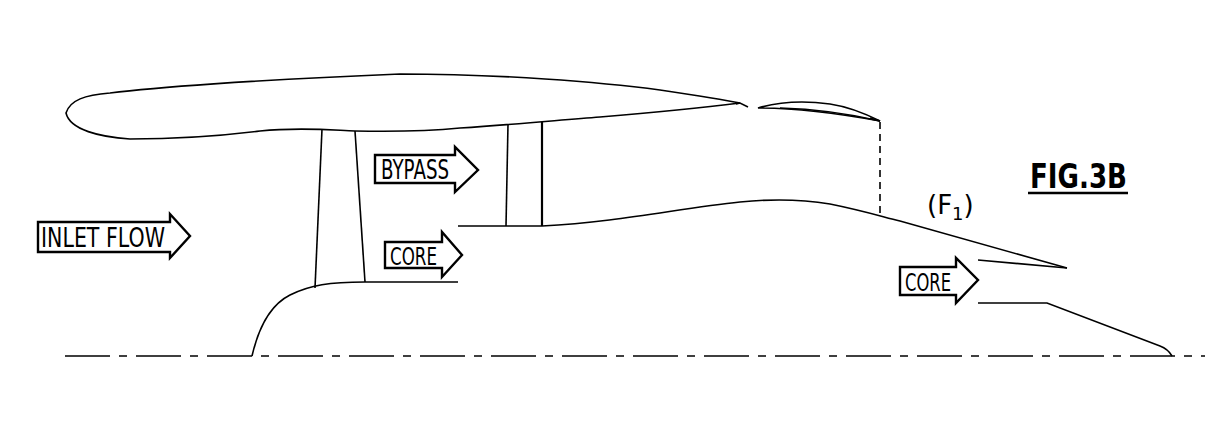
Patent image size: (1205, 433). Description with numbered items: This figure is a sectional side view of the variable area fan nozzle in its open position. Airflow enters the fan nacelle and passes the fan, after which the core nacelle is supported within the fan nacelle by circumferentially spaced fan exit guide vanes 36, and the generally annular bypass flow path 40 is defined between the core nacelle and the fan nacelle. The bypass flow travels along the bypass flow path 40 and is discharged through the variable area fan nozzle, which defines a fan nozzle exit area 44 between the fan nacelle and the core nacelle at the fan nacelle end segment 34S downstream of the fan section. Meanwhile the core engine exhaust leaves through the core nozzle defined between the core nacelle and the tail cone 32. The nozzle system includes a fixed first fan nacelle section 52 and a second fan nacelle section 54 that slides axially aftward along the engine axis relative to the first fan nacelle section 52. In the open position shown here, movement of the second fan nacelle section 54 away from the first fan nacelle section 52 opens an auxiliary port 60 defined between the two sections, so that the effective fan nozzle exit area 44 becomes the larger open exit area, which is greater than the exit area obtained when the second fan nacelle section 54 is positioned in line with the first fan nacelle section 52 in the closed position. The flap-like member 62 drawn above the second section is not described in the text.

The tail cone 32 is at (1115, 327).
The fan nacelle end segment 34S is at (882, 120).
The fan exit guide vanes 36 is at (543, 176).
The bypass flow path 40 is at (655, 198).
The fan nozzle exit area 44 is at (893, 165).
The first fan nacelle section 52 is at (653, 107).
The second fan nacelle section 54 is at (818, 115).
The auxiliary port 60 is at (746, 110).
The variable area fan nozzle flap 62 is at (779, 92).